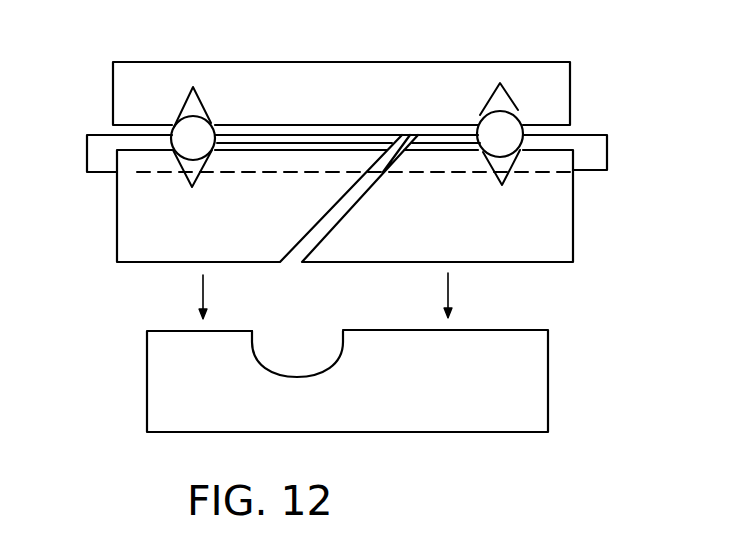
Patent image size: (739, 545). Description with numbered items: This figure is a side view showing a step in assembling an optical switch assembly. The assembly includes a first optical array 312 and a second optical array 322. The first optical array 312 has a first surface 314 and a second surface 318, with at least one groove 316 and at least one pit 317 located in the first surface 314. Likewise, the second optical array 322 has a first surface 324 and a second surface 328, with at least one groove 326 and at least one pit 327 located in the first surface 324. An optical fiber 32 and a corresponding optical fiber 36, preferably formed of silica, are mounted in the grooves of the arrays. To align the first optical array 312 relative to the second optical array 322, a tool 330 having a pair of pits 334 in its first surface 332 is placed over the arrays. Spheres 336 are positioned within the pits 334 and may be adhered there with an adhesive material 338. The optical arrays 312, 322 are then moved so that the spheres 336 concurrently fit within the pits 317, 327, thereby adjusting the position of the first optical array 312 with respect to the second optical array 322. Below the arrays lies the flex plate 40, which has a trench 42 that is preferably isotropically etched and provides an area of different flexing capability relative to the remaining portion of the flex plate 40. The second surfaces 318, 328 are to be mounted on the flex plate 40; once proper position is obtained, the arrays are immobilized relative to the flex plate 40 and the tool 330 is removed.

The tool 330 is at (370, 94).
The first surface 314 is at (575, 135).
The first surface 324 is at (288, 150).
The second optical array 322 is at (207, 234).
The first optical array 312 is at (454, 231).
The spheres 336 is at (206, 132).
The pits 334 is at (190, 83).
The adhesive material 338 is at (178, 120).
The first surface 332 is at (326, 123).
The pit 327 is at (185, 187).
The pit 317 is at (502, 160).
The optical fiber 36 is at (98, 161).
The groove 326 is at (150, 162).
The second surface 328 is at (138, 264).
The second surface 318 is at (550, 262).
The optical fiber 32 is at (597, 160).
The groove 316 is at (543, 160).
The flex plate 40 is at (507, 386).
The trench 42 is at (318, 362).